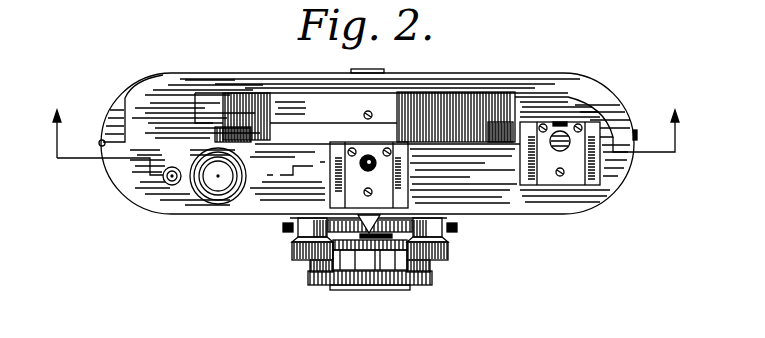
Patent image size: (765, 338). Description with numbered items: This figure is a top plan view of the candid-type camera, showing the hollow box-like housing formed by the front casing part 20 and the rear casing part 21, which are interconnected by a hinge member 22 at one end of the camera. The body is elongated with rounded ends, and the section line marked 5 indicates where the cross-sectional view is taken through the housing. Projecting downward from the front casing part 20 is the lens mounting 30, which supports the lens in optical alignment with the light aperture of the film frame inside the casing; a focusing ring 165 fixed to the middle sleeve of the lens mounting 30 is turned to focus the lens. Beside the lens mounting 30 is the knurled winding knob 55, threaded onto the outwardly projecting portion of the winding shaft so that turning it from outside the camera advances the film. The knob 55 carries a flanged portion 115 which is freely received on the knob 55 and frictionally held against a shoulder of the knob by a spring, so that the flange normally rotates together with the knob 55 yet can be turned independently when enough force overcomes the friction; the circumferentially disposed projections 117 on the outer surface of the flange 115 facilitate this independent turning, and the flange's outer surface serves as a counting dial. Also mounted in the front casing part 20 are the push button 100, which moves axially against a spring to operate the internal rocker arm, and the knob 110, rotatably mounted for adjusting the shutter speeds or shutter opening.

The section line 5- 5 is at (364, 136).
The front casing part 20 is at (532, 209).
The rear casing part 21 is at (483, 80).
The hinge member 22 is at (103, 140).
The lens mounting 30 is at (425, 291).
The knurled winding knob 55 is at (292, 256).
The push button 100 is at (212, 180).
The knob 110 is at (450, 255).
The flanged portion 115 is at (290, 203).
The circumferentially disposed projections 117 is at (313, 211).
The focusing ring 165 is at (458, 228).